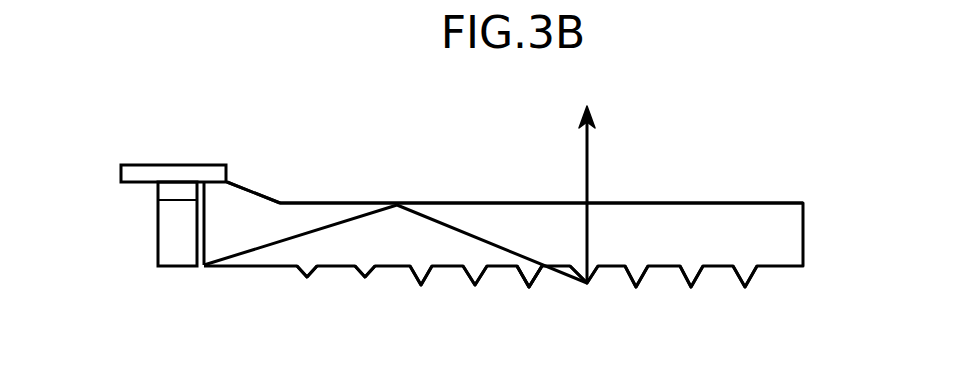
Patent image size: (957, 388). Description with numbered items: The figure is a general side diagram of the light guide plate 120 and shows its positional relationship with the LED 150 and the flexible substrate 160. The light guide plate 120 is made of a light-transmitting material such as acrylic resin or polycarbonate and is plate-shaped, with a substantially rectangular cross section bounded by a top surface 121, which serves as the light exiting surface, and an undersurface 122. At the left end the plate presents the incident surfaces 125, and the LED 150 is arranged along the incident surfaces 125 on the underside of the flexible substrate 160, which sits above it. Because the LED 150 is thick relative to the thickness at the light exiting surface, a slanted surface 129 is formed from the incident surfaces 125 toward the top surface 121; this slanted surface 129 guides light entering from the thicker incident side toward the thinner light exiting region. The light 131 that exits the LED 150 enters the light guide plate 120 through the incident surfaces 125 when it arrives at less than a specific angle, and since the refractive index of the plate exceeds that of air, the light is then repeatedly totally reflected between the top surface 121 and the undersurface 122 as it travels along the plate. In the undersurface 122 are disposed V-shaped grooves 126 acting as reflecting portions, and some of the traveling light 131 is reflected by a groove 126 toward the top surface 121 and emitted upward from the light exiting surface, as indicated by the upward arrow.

The light guide plate 120 is at (393, 253).
The top surface 121 is at (670, 203).
The undersurface 122 is at (655, 270).
The incident surfaces 125 is at (200, 225).
The V-shaped grooves 126 is at (527, 283).
The slanted surface 129 is at (253, 190).
The light 131 is at (262, 245).
The LED 150 is at (177, 252).
The flexible substrate 160 is at (168, 165).